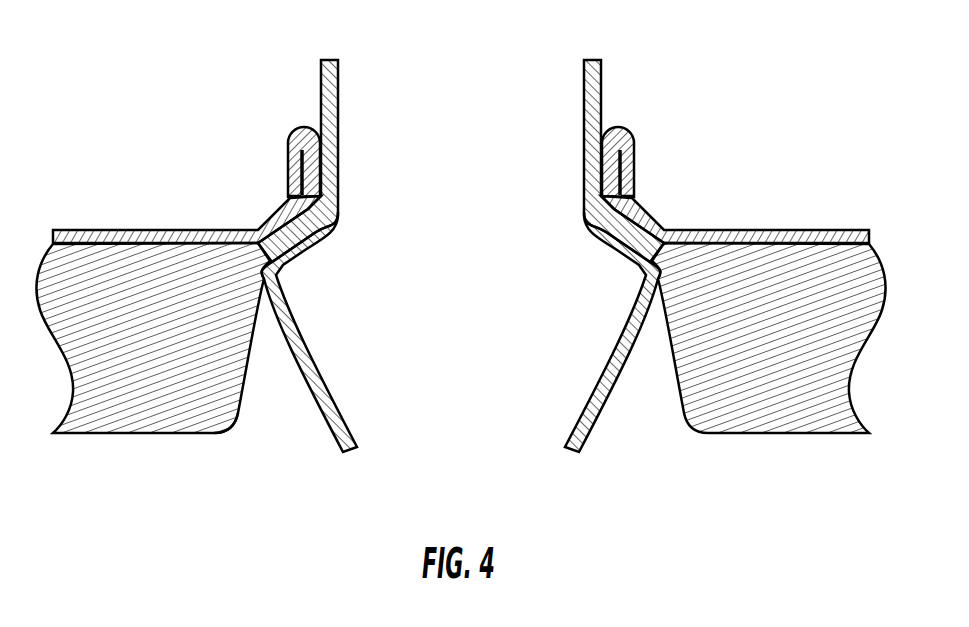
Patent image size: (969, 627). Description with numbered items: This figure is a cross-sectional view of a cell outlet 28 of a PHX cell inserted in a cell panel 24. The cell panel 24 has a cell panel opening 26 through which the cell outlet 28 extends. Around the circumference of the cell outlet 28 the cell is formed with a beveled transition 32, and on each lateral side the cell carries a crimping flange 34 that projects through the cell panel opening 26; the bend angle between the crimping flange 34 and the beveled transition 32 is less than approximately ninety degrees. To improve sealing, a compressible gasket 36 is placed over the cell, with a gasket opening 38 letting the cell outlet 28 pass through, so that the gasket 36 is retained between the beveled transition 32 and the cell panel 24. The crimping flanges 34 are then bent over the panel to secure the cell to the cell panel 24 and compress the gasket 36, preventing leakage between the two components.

The cell panel 24 is at (135, 228).
The cell panel opening 26 is at (287, 142).
The cell outlet 28 is at (478, 168).
The beveled transition 32 is at (313, 252).
The crimping flange 34 is at (320, 87).
The compressible gasket 36 is at (723, 397).
The gasket opening 38 is at (240, 415).